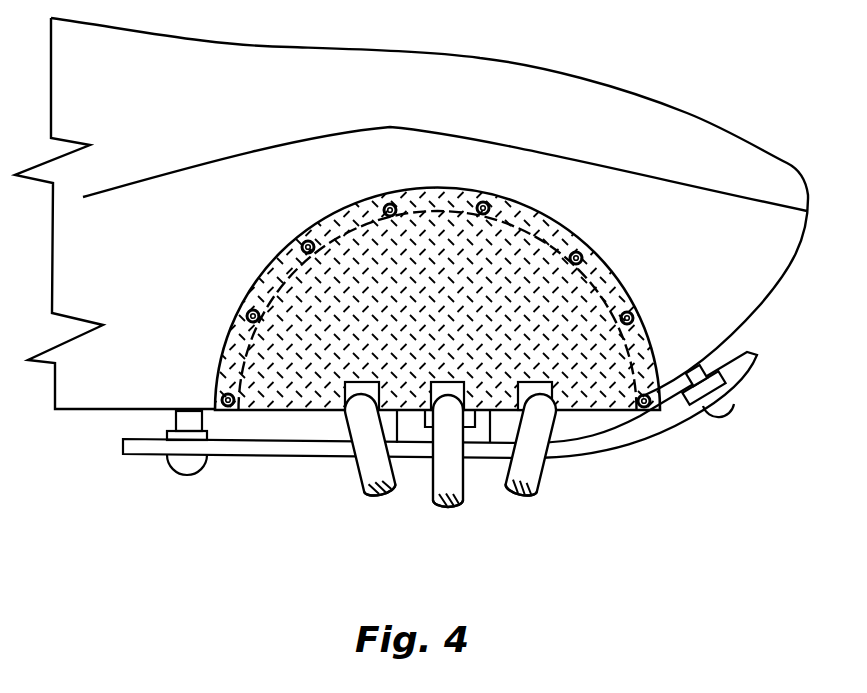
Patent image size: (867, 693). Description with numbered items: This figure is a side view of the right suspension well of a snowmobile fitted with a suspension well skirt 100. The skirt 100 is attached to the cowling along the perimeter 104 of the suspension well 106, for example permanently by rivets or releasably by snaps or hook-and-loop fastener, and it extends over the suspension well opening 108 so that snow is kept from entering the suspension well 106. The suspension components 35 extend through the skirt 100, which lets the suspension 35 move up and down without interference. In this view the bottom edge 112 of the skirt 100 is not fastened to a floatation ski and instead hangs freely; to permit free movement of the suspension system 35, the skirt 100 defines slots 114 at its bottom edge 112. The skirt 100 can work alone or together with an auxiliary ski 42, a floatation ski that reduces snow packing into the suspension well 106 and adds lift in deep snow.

The suspension components 35 is at (413, 503).
The auxiliary ski 42 is at (745, 383).
The suspension well skirt 100 is at (605, 383).
The perimeter 104 is at (257, 282).
The suspension well 106 is at (590, 296).
The suspension well opening 108 is at (360, 267).
The bottom edge 112 is at (280, 413).
The slots 114 is at (350, 393).